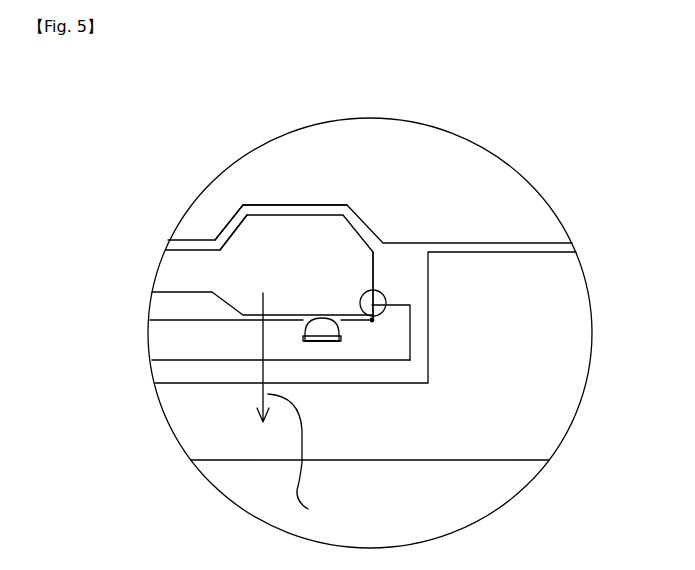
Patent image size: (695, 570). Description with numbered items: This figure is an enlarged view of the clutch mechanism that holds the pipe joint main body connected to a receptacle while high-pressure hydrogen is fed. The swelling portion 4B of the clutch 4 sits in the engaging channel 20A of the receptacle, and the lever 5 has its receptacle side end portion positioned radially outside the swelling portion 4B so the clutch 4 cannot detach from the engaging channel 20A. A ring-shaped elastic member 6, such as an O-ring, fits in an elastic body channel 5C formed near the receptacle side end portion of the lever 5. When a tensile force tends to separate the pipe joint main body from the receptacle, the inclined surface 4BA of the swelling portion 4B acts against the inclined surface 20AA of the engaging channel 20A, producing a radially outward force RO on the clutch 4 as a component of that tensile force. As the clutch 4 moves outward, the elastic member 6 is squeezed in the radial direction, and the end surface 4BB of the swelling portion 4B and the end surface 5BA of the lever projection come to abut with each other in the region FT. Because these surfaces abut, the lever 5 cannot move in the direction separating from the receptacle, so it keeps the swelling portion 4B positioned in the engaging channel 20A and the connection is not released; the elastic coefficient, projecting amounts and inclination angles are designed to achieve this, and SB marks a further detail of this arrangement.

The clutch 4 is at (178, 257).
The swelling portion 4B is at (340, 232).
The inclined surface 4BA is at (228, 235).
The end surface 4BB is at (373, 277).
The engaging channel 20A is at (305, 206).
The inclined surface 20AA is at (240, 208).
The lever 5 is at (177, 343).
The elastic body channel 5C is at (315, 340).
The end surface 5BA is at (371, 321).
The elastic member 6 is at (328, 338).
The region FT is at (384, 296).
The solder bonding region SB is at (407, 347).
The radially outward force RO is at (299, 412).